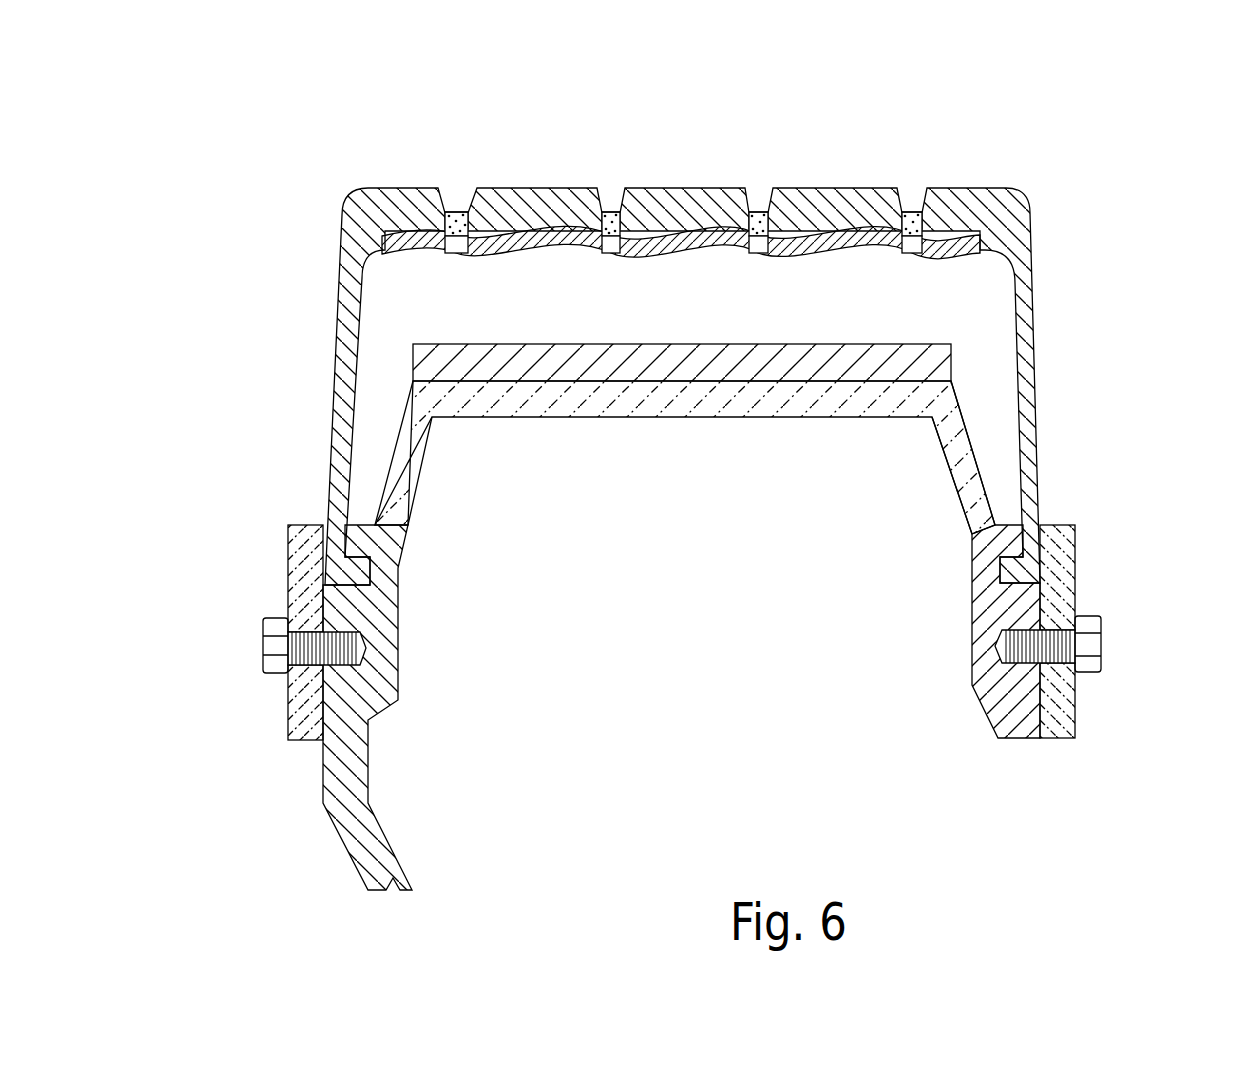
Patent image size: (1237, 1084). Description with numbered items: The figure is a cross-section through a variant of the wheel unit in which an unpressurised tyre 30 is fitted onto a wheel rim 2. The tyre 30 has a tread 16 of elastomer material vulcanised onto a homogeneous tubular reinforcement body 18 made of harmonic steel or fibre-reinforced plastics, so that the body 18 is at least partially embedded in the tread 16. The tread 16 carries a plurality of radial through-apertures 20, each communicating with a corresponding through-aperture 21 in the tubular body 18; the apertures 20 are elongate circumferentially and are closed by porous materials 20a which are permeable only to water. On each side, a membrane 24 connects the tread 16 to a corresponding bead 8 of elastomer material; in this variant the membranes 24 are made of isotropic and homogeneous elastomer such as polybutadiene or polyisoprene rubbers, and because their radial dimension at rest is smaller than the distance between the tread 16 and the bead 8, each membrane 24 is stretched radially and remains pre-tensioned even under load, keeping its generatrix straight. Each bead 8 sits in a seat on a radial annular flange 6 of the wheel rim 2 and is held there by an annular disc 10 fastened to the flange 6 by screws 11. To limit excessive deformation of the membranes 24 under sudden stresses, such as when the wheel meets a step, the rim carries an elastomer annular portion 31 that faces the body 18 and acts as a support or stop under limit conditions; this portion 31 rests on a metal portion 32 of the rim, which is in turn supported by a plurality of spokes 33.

The wheel rim 2 is at (326, 846).
The radial annular flange 6 is at (352, 707).
The bead 8 is at (320, 553).
The annular disc 10 is at (310, 697).
The screw 11 is at (272, 642).
The tread 16 is at (351, 181).
The tubular reinforcement body 18 is at (528, 250).
The radial through-aperture 20 is at (451, 206).
The water-permeable material 20a is at (468, 205).
The through-aperture 21 is at (452, 245).
The membrane 24 is at (332, 400).
The tyre 30 is at (1114, 165).
The annular portion 31 is at (651, 344).
The metal portion 32 is at (690, 406).
The spoke 33 is at (415, 450).